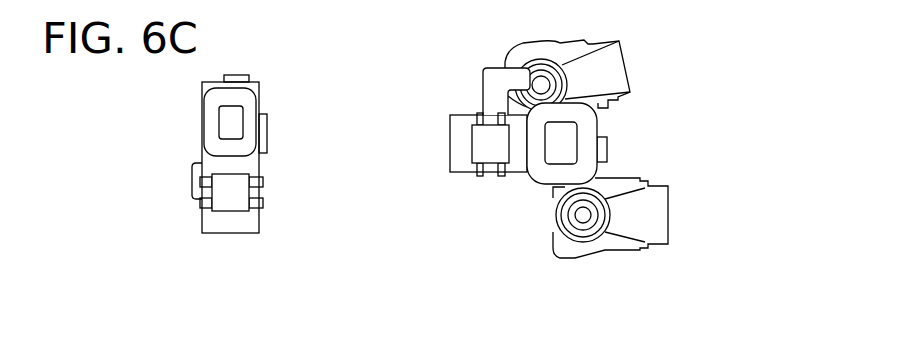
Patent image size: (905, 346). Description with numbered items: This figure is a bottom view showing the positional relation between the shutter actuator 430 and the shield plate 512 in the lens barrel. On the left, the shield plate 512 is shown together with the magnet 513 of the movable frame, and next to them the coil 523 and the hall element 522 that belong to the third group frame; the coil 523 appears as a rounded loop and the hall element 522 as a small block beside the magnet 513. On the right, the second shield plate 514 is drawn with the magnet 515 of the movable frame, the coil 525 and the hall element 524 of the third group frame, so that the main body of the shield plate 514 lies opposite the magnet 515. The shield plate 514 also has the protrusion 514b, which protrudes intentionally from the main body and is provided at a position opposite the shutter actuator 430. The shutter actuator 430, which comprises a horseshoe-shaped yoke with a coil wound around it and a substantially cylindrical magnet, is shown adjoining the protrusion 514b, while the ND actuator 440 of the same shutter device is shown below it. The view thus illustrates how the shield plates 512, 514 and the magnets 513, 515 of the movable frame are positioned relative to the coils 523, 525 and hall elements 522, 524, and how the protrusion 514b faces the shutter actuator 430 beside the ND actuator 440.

The shield plate 512 is at (198, 172).
The magnet 513 is at (206, 220).
The hall element 522 is at (231, 192).
The coil 523 is at (210, 122).
The shield plate 514 is at (609, 147).
The protrusion 514b is at (498, 85).
The magnet 515 is at (460, 138).
The hall element 524 is at (493, 148).
The coil 525 is at (542, 168).
The shutter actuator 430 is at (612, 68).
The ND actuator 440 is at (654, 218).